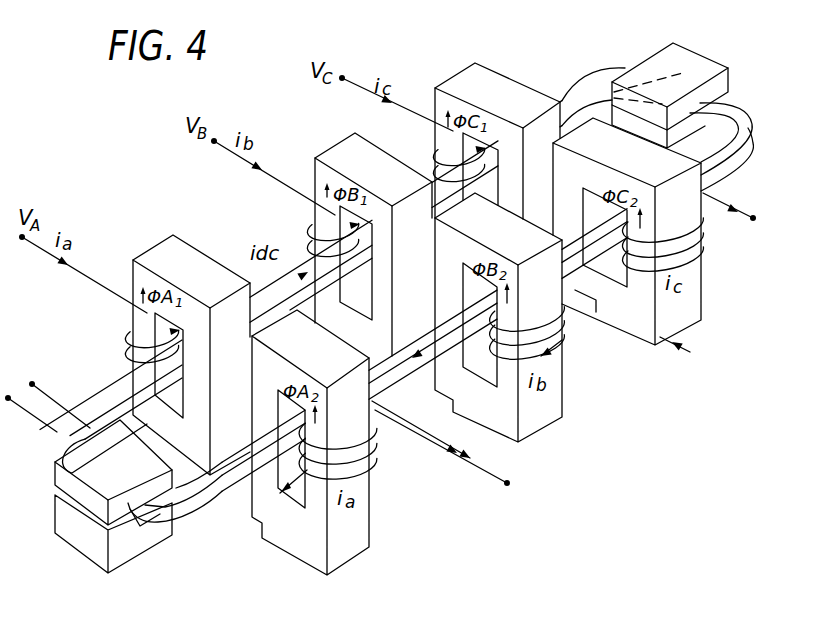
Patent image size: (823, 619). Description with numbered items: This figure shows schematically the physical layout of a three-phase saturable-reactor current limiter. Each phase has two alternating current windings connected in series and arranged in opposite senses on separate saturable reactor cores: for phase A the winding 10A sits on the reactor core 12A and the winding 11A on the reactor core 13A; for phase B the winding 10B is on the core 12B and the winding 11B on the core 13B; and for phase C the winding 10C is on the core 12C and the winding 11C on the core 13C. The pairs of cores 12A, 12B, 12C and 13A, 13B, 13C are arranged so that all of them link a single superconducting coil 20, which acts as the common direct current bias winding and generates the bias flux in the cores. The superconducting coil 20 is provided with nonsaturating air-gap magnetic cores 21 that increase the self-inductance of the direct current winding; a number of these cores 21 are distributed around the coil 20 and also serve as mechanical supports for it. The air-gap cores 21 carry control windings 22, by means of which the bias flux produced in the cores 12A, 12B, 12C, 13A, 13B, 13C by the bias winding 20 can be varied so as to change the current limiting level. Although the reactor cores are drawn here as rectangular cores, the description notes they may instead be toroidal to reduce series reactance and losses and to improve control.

The winding 10A is at (125, 340).
The winding 10B is at (310, 225).
The winding 10C is at (432, 150).
The winding 11A is at (375, 464).
The winding 11B is at (567, 338).
The winding 11C is at (702, 242).
The saturable reactor core 12A is at (161, 253).
The saturable reactor core 12B is at (353, 147).
The saturable reactor core 12C is at (508, 88).
The saturable reactor core 13A is at (360, 524).
The saturable reactor core 13B is at (543, 410).
The saturable reactor core 13C is at (690, 303).
The superconducting coil 20 is at (195, 504).
The air-gap magnetic core 21 is at (672, 62).
The control winding 22 is at (86, 521).